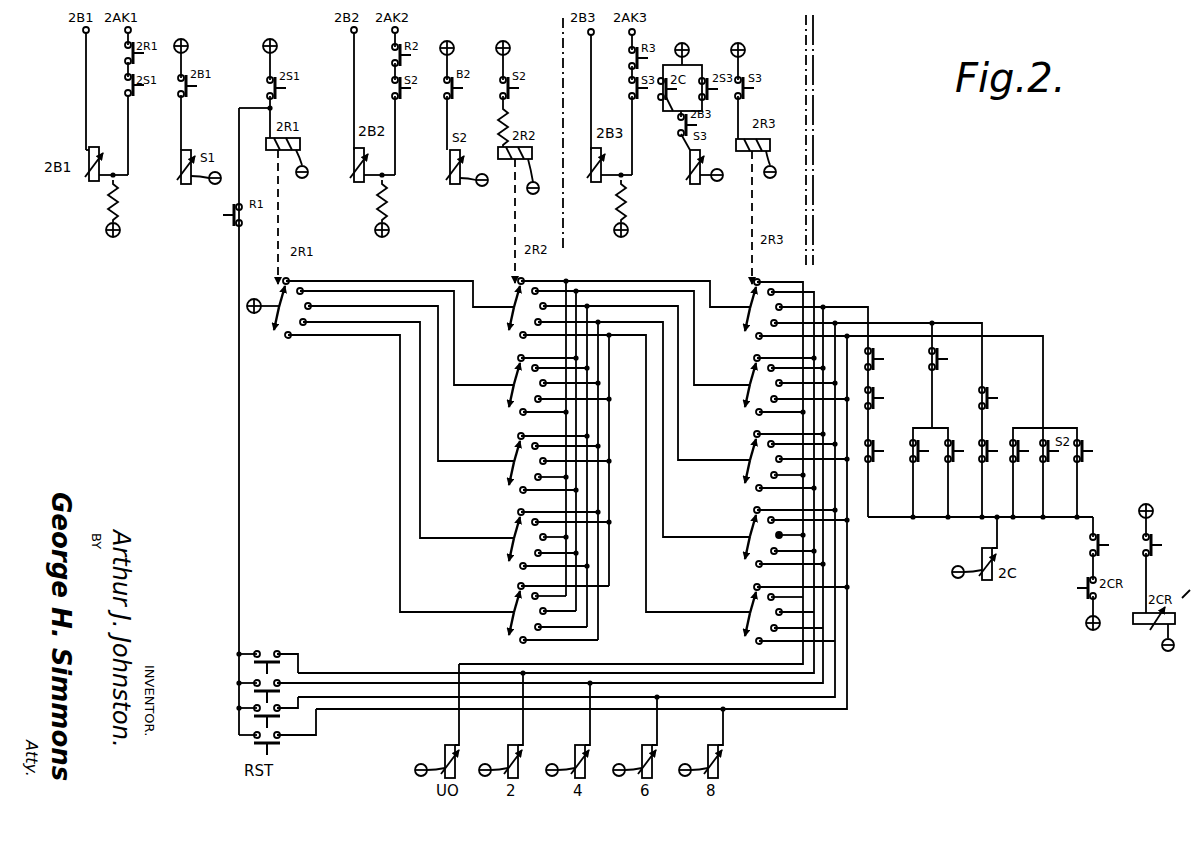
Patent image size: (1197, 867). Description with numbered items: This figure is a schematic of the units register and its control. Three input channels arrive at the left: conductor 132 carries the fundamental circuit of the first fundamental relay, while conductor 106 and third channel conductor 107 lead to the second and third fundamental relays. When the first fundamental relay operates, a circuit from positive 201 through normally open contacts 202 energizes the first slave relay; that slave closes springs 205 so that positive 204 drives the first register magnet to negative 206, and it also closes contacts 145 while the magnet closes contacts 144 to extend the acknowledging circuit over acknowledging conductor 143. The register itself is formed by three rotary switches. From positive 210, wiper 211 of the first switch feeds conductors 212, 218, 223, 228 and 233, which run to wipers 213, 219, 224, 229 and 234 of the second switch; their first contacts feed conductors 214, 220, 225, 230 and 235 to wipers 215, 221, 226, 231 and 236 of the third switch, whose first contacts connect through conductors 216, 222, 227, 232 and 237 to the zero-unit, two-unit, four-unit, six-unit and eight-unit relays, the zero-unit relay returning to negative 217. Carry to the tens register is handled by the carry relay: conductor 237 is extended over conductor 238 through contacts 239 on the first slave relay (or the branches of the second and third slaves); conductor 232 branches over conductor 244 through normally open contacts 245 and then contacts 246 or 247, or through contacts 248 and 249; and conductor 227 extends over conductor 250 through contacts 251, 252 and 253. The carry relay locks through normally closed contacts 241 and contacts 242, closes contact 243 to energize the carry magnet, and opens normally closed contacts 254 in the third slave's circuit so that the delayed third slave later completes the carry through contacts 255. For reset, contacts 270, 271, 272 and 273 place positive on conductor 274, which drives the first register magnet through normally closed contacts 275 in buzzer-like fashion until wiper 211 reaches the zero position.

The conductor 106 is at (354, 80).
The third channel conductor 107 is at (591, 72).
The conductor 132 is at (86, 80).
The acknowledging conductor 143 is at (131, 31).
The contacts 144 is at (142, 55).
The contacts 145 is at (148, 94).
The positive 201 is at (184, 40).
The normally open contacts 202 is at (195, 99).
The positive 204 is at (275, 32).
The springs 205 is at (273, 108).
The negative 206 is at (302, 179).
The positive 210 is at (249, 312).
The wiper 211 is at (280, 296).
The conductor 212 is at (449, 281).
The wiper 213 is at (512, 295).
The conductor 214 is at (593, 281).
The wiper 215 is at (748, 294).
The conductor 216 is at (780, 281).
The negative 217 is at (442, 758).
The conductor 218 is at (398, 291).
The wiper 219 is at (512, 381).
The conductor 220 is at (615, 291).
The wiper 221 is at (748, 382).
The conductor 222 is at (796, 358).
The conductor 223 is at (372, 306).
The wiper 224 is at (512, 455).
The conductor 225 is at (630, 306).
The wiper 226 is at (748, 456).
The conductor 227 is at (825, 531).
The conductor 228 is at (420, 424).
The wiper 229 is at (512, 532).
The conductor 230 is at (652, 322).
The wiper 231 is at (748, 532).
The conductor 232 is at (837, 555).
The conductor 233 is at (400, 385).
The wiper 234 is at (512, 606).
The conductor 235 is at (646, 604).
The wiper 236 is at (748, 608).
The conductor 237 is at (849, 592).
The conductor 238 is at (1028, 335).
The contacts 239 is at (1032, 474).
The normally closed contacts 241 is at (1108, 613).
The normally open contacts 242 is at (1110, 551).
The contact 243 is at (1162, 551).
The conductor 244 is at (917, 322).
The normally open contacts 245 is at (955, 362).
The contacts 246 is at (930, 474).
The contacts 247 is at (963, 474).
The normally open contacts 248 is at (1006, 400).
The contacts 249 is at (998, 474).
The conductor 250 is at (858, 304).
The contacts 251 is at (898, 360).
The contacts 252 is at (898, 399).
The contacts 253 is at (886, 458).
The normally closed contacts 254 is at (668, 110).
The contacts 255 is at (1100, 458).
The contacts 270 is at (240, 657).
The contacts 271 is at (240, 686).
The contacts 272 is at (240, 712).
The contacts 273 is at (240, 739).
The conductor 274 is at (240, 522).
The normally closed contacts 275 is at (250, 229).